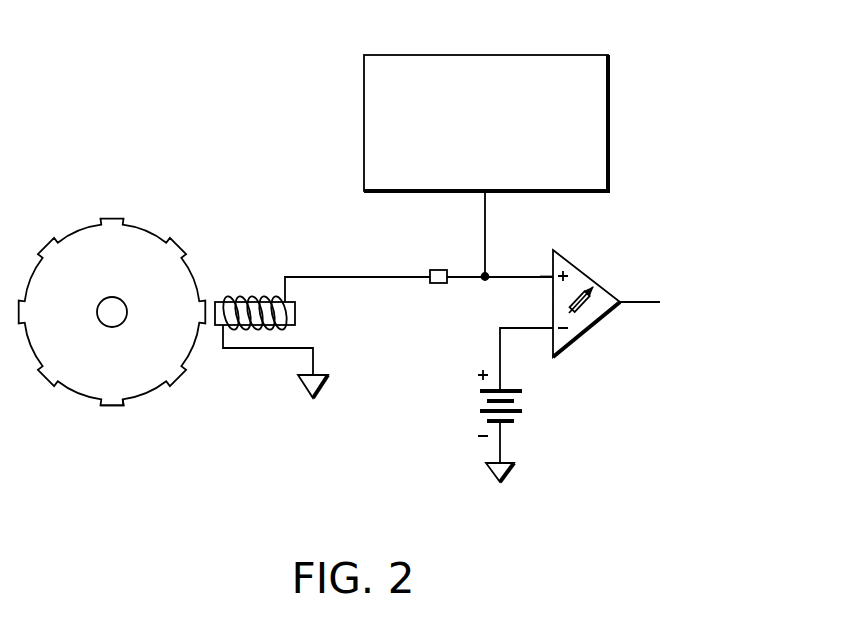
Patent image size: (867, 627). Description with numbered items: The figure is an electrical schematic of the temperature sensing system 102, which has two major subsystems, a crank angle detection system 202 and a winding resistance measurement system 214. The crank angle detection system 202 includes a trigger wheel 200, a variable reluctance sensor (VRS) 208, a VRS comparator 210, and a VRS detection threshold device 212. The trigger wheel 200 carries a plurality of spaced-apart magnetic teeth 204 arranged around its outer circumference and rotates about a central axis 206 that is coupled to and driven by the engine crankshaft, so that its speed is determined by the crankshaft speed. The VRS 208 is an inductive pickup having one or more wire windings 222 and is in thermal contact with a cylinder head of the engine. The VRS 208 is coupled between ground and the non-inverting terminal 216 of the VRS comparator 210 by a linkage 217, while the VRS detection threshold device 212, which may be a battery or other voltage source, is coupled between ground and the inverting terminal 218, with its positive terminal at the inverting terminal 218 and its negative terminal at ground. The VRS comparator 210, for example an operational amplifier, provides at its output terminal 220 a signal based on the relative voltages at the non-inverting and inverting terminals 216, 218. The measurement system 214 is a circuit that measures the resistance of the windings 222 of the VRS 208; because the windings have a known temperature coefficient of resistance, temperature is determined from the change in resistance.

The temperature sensing system 102 is at (637, 40).
The trigger wheel 200 is at (144, 228).
The crank angle detection system 202 is at (322, 160).
The magnetic teeth 204 is at (114, 406).
The central axis 206 is at (112, 310).
The variable reluctance sensor (VRS) 208 is at (254, 326).
The VRS comparator 210 is at (629, 319).
The VRS detection threshold device 212 is at (466, 410).
The measurement system 214 is at (364, 85).
The non-inverting terminal 216 is at (547, 272).
The linkage 217 is at (392, 277).
The inverting terminal 218 is at (547, 324).
The output terminal 220 is at (623, 298).
The wire windings 222 is at (257, 290).